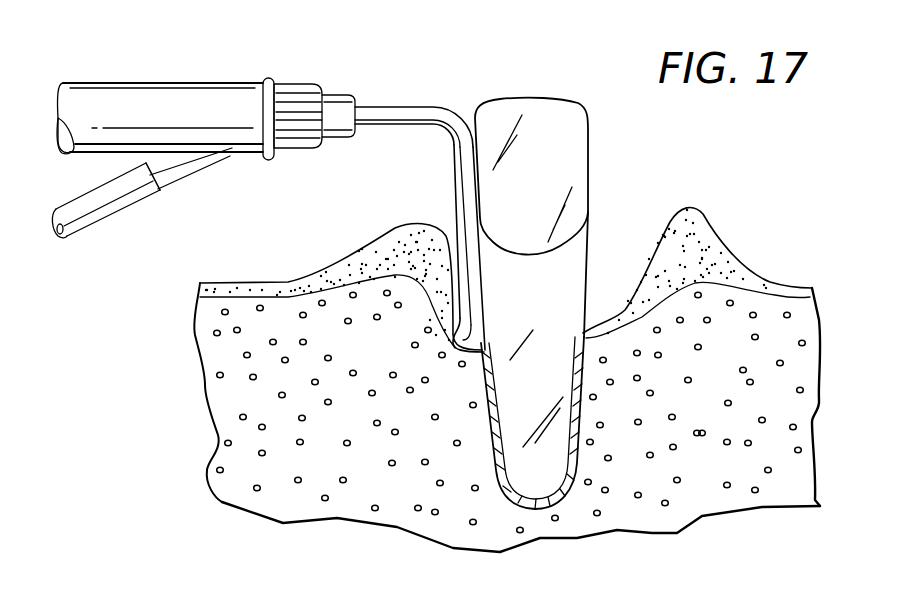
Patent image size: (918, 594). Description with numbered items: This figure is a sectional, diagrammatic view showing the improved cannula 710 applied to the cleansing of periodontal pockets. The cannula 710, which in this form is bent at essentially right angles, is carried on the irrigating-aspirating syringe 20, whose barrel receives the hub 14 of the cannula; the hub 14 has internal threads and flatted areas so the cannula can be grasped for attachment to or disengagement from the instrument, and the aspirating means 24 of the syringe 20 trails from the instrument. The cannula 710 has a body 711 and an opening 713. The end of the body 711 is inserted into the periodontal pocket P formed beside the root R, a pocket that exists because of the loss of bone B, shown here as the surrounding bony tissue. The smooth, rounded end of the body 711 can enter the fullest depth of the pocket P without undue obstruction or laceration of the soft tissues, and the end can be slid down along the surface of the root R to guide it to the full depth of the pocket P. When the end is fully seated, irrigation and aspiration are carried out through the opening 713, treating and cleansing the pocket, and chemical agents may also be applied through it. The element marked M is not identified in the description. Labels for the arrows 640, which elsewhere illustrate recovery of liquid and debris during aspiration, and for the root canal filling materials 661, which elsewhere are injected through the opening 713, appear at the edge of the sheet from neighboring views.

The irrigating-aspirating syringe 20 is at (180, 93).
The hub 14 is at (295, 90).
The aspirating means 24 is at (100, 202).
The cannula 710 is at (420, 199).
The body 711 is at (420, 253).
The opening 713 is at (470, 317).
The root R is at (592, 233).
The periodontal pocket P is at (647, 224).
The periodontal membrane M is at (512, 503).
The bone B is at (808, 408).
The arrows 640 is at (250, 578).
The root canal filling materials 661 is at (707, 573).